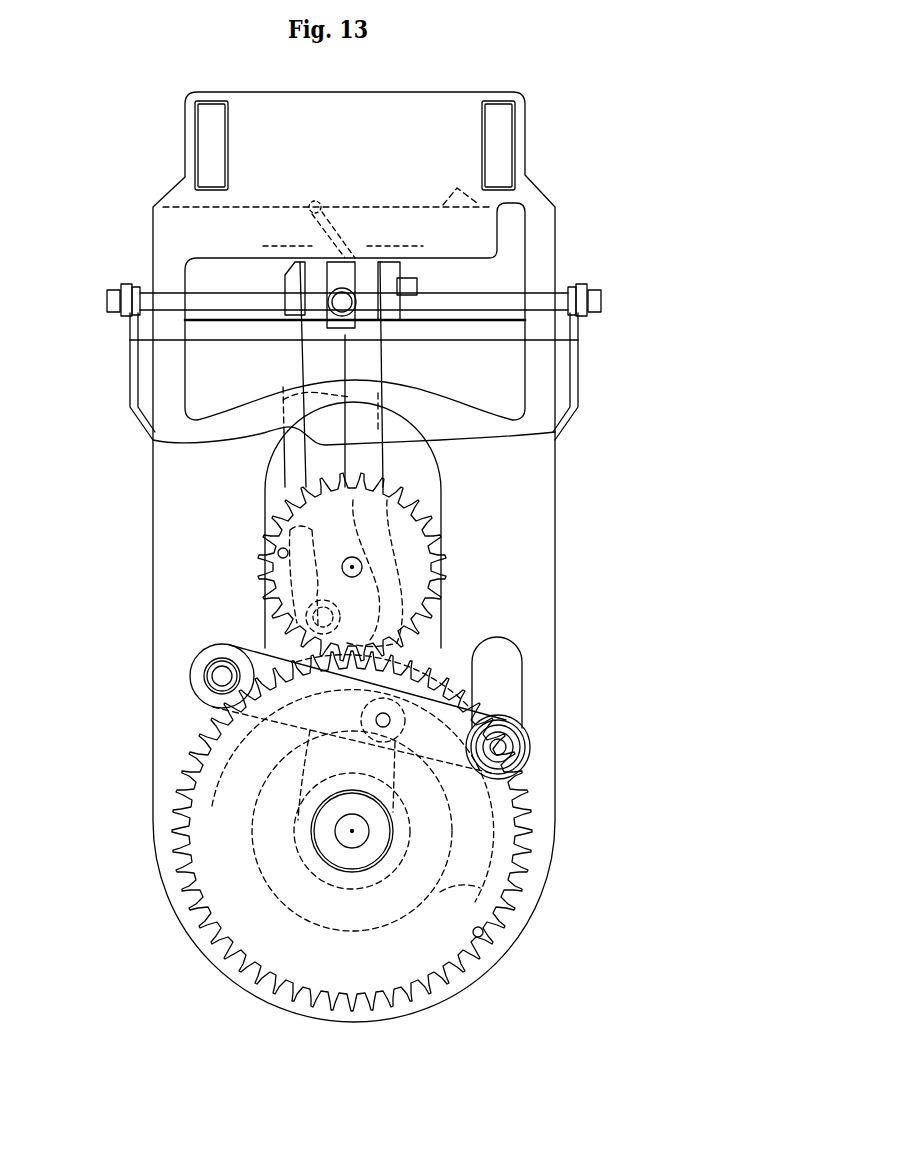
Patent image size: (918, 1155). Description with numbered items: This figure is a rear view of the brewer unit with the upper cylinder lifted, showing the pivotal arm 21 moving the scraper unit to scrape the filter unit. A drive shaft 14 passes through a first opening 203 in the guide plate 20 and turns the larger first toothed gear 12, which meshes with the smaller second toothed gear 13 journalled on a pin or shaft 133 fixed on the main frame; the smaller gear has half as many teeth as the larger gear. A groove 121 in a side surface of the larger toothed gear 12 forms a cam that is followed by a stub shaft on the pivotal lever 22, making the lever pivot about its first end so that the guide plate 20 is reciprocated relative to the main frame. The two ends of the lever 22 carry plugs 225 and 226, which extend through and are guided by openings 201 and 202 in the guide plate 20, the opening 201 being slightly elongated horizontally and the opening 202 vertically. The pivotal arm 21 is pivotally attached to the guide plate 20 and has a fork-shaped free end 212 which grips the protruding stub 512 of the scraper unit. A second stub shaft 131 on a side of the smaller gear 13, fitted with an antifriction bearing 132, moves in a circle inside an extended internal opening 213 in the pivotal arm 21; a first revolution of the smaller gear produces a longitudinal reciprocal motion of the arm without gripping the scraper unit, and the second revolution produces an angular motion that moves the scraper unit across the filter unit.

The larger first toothed gear 12 is at (517, 877).
The second toothed gear 13 is at (430, 507).
The drive shaft 14 is at (340, 840).
The guide plate 20 is at (540, 548).
The pivotal arm 21 is at (545, 442).
The pivotal lever 22 is at (210, 703).
The groove 121 is at (453, 890).
The second stub shaft 131 is at (300, 603).
The antifriction bearing 132 is at (320, 597).
The pin or shaft 133 is at (363, 560).
The opening 201 is at (187, 670).
The opening 202 is at (487, 683).
The first opening 203 is at (352, 782).
The second free end 212 is at (385, 272).
The extended internal opening 213 is at (153, 440).
The plug 225 is at (218, 657).
The plug 226 is at (523, 730).
The protruding stub 512 is at (342, 290).